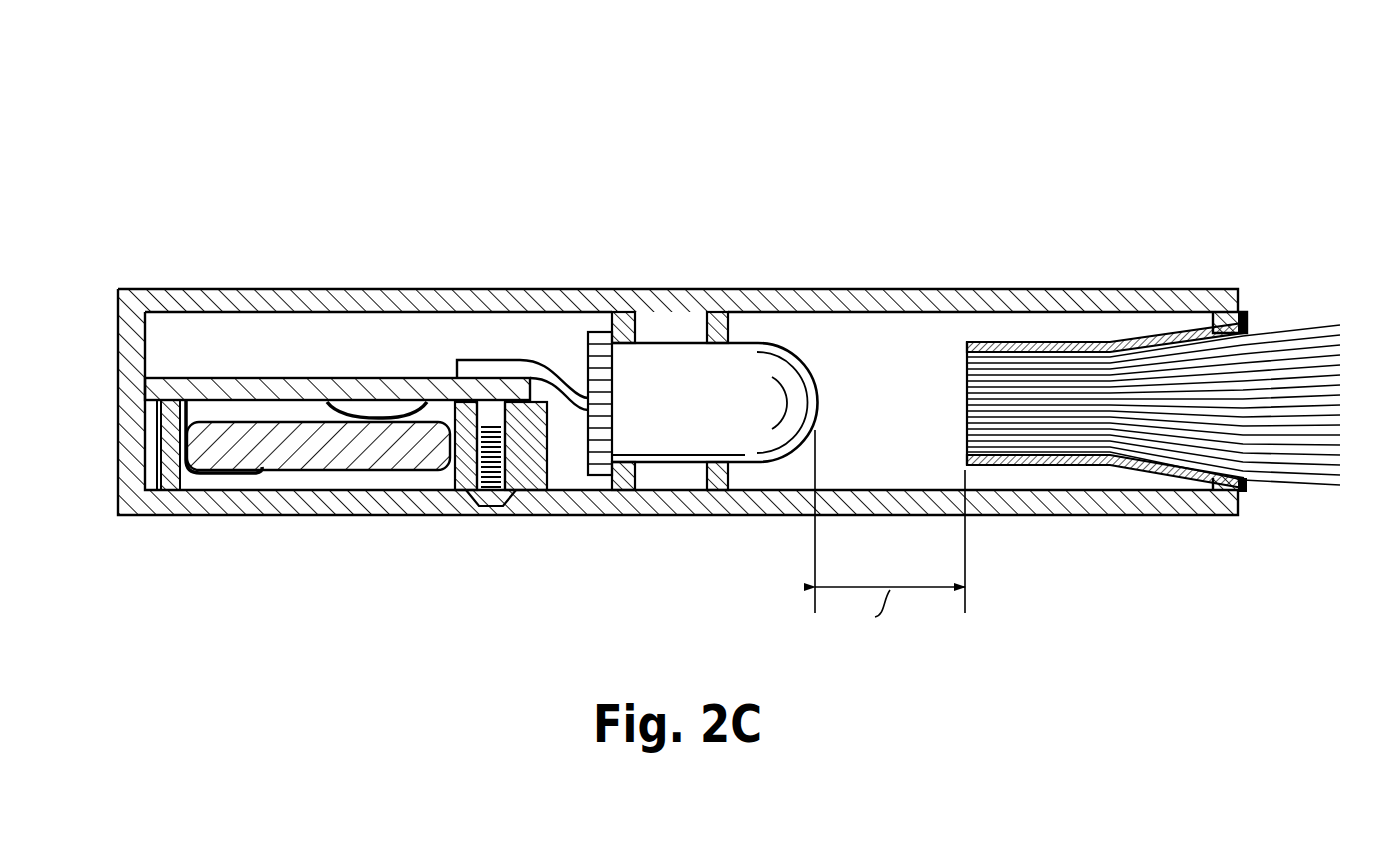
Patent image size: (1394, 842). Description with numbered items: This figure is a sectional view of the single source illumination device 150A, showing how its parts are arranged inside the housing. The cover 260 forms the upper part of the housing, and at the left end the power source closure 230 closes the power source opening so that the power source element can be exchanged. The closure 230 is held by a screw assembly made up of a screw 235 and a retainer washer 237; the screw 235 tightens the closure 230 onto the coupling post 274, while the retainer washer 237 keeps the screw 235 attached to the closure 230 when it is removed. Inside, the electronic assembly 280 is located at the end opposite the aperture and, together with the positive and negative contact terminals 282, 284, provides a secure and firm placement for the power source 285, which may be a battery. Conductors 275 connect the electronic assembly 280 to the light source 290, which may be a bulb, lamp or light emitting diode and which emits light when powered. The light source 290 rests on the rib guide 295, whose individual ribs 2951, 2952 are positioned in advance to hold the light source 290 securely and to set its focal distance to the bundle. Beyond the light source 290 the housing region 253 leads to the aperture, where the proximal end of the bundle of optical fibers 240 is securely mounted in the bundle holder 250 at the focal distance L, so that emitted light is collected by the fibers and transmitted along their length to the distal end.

The single source illumination device 150A is at (1192, 206).
The power source closure 230 is at (147, 515).
The cover 260 is at (213, 289).
The electronic assembly 280 is at (263, 378).
The negative contact terminal 284 is at (360, 404).
The conductors 275 is at (480, 368).
The rib guide 295 is at (753, 230).
The first lamp support 2951 is at (633, 335).
The second lamp support 2952 is at (753, 250).
The light source 290 is at (758, 403).
The distal housing portion 253 is at (877, 352).
The positive contact terminal 282 is at (243, 480).
The power source 285 is at (342, 453).
The retainer washer 237 is at (460, 492).
The screw 235 is at (491, 493).
The coupling post 274 is at (520, 453).
The bundle holder 250 is at (797, 505).
The bundle of optical fibers 240 is at (1247, 482).